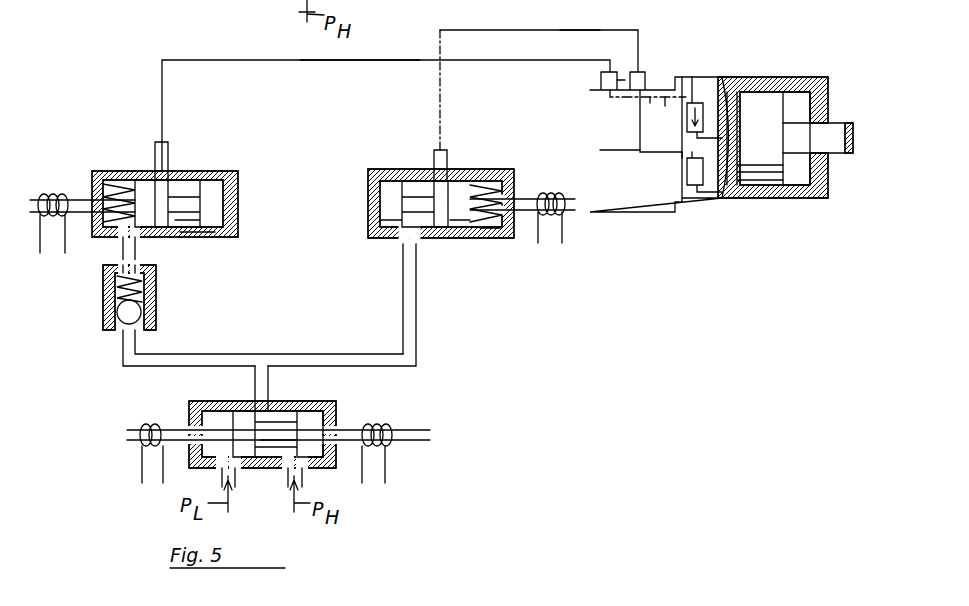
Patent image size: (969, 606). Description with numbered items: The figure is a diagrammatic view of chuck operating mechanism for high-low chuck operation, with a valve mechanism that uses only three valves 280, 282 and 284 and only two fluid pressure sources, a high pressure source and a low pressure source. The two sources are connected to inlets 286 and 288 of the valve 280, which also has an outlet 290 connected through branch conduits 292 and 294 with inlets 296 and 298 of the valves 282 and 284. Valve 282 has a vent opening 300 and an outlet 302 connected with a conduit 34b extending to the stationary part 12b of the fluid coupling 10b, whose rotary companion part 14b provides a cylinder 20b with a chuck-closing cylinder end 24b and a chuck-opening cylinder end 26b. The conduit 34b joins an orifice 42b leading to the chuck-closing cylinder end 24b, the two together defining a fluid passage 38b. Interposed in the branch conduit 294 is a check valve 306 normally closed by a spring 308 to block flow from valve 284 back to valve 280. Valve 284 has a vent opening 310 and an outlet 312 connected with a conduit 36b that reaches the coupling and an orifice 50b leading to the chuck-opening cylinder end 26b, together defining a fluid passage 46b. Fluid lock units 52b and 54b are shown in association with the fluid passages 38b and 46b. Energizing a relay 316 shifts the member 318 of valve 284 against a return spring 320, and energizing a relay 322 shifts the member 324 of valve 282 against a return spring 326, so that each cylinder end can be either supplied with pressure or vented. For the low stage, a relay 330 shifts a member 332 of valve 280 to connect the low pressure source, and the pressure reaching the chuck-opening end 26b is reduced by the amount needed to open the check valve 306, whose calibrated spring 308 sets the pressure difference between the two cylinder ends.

The fluid coupling 10b is at (752, 70).
The stationary part 12b is at (590, 128).
The rotary companion part 14b is at (722, 78).
The cylinder 20b is at (792, 100).
The chuck-closing cylinder end 24b is at (800, 168).
The chuck-opening cylinder end 26b is at (733, 170).
The conduit 34b is at (497, 32).
The conduit 36b is at (340, 62).
The fluid passage 38b is at (576, 29).
The orifice 42b is at (654, 150).
The fluid passage 46b is at (300, 63).
The orifice 50b is at (666, 100).
The fluid lock unit 52b is at (690, 173).
The fluid lock unit 54b is at (693, 102).
The valve 280 is at (190, 401).
The valve 282 is at (392, 168).
The valve 284 is at (206, 167).
The inlet 286 is at (300, 468).
The inlet 288 is at (219, 468).
The outlet 290 is at (266, 408).
The branch conduit 292 is at (417, 362).
The branch conduit 294 is at (124, 360).
The inlet 296 is at (414, 240).
The inlet 298 is at (127, 236).
The vent opening 300 is at (490, 232).
The outlet 302 is at (446, 178).
The check valve 306 is at (102, 320).
The spring 308 is at (148, 295).
The vent opening 310 is at (195, 234).
The outlet 312 is at (160, 177).
The relay 316 is at (48, 192).
The member 318 is at (178, 208).
The return spring 320 is at (112, 188).
The relay 322 is at (553, 197).
The member 324 is at (418, 196).
The return spring 326 is at (505, 188).
The relay 330 is at (383, 428).
The member 332 is at (276, 440).